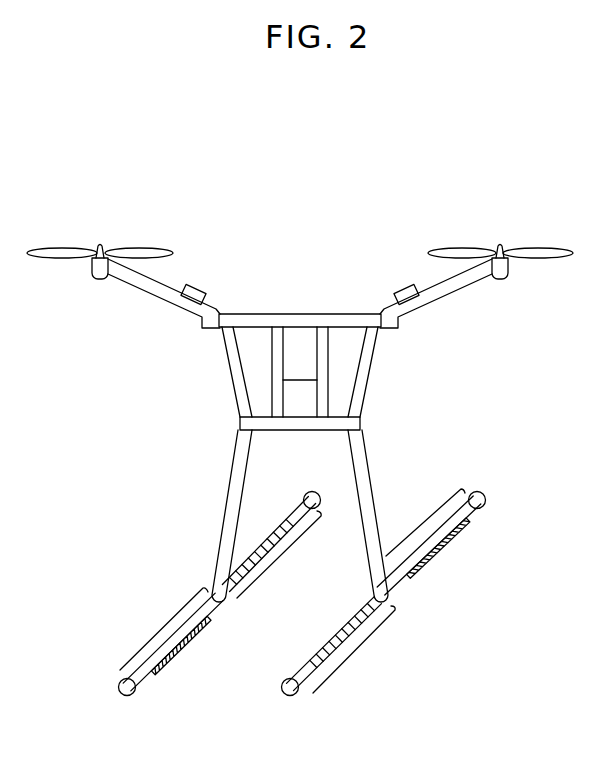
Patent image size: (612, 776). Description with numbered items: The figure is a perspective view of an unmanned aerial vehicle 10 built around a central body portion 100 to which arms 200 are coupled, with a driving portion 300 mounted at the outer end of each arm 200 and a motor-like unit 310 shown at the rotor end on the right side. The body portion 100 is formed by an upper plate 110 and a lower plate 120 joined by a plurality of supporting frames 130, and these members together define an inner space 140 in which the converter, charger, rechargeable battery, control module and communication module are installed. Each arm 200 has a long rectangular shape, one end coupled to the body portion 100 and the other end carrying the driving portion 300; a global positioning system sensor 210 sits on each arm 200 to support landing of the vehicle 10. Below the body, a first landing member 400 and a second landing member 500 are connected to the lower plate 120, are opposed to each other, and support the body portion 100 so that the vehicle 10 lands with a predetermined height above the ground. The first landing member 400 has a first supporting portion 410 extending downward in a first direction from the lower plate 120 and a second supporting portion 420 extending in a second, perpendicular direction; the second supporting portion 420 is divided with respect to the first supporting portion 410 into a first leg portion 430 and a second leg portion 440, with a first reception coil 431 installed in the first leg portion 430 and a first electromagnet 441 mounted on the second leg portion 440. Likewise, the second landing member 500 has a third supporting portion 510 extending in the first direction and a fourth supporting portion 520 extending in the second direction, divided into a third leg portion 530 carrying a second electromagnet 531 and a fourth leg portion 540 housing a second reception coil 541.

The unmanned aerial vehicle 10 is at (312, 140).
The body portion 100 is at (390, 368).
The upper plate 110 is at (300, 313).
The lower plate 120 is at (240, 422).
The supporting frames 130 is at (227, 372).
The inner space 140 is at (300, 372).
The arm 200 is at (167, 308).
The GPS sensor 210 is at (204, 283).
The driving portion 300 is at (557, 267).
The motor 310 is at (498, 282).
The first landing member 400 is at (502, 489).
The first supporting portion 410 is at (368, 460).
The second supporting portion 420 is at (282, 706).
The first leg portion 430 is at (357, 649).
The first reception coil 431 is at (303, 663).
The second leg portion 440 is at (427, 521).
The first electromagnet 441 is at (452, 550).
The second landing member 500 is at (167, 535).
The third supporting portion 510 is at (235, 462).
The fourth supporting portion 520 is at (103, 703).
The third leg portion 530 is at (170, 621).
The second electromagnet 531 is at (185, 650).
The fourth leg portion 540 is at (283, 556).
The second reception coil 541 is at (282, 517).